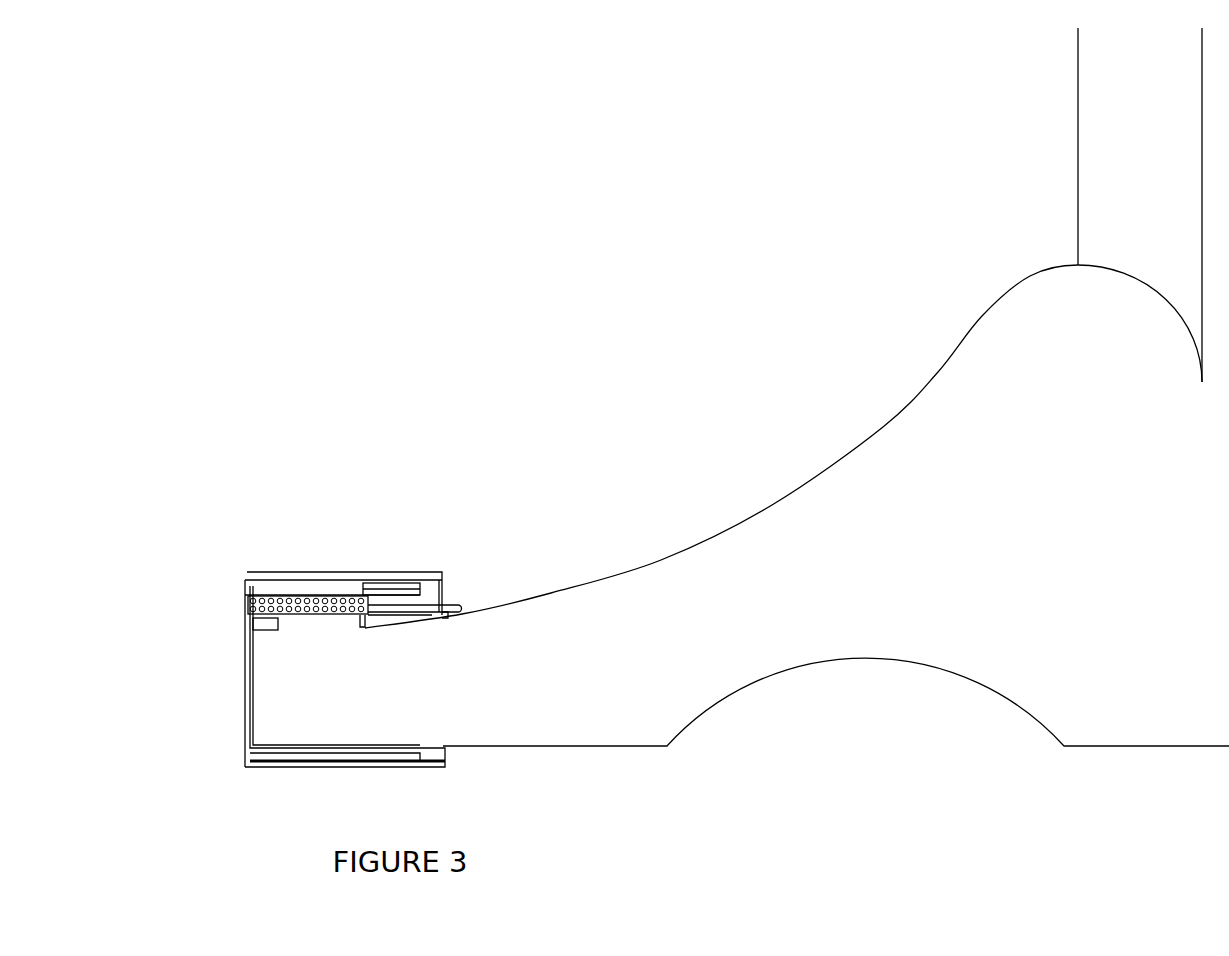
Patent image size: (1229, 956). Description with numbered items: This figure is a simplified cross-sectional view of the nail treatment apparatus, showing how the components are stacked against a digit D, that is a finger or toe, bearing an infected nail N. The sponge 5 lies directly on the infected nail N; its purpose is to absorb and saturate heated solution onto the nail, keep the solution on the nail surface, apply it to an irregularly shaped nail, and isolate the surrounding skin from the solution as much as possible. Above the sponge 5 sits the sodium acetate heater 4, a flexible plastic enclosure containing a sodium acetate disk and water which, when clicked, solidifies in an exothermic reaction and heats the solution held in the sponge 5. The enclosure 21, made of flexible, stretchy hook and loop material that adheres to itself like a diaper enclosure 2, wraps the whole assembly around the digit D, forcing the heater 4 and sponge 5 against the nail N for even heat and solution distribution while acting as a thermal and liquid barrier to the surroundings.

The diaper enclosure 2 is at (445, 569).
The sodium acetate heater 4 is at (310, 583).
The sponge 5 is at (328, 611).
The enclosure 21 is at (314, 752).
The infected nail N is at (271, 620).
The digit D is at (307, 700).